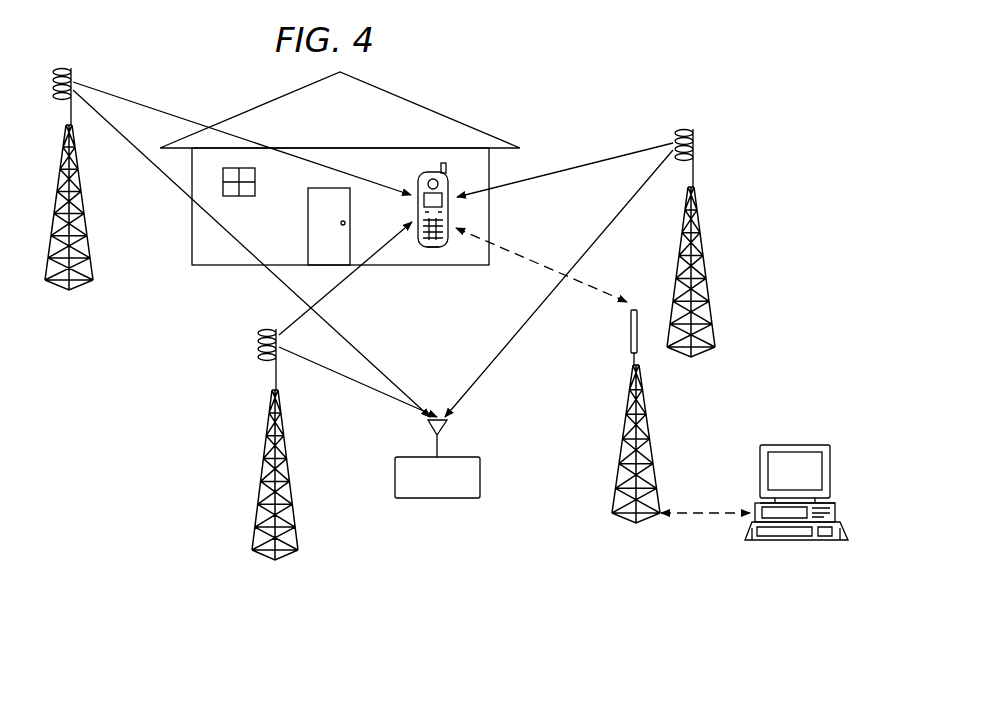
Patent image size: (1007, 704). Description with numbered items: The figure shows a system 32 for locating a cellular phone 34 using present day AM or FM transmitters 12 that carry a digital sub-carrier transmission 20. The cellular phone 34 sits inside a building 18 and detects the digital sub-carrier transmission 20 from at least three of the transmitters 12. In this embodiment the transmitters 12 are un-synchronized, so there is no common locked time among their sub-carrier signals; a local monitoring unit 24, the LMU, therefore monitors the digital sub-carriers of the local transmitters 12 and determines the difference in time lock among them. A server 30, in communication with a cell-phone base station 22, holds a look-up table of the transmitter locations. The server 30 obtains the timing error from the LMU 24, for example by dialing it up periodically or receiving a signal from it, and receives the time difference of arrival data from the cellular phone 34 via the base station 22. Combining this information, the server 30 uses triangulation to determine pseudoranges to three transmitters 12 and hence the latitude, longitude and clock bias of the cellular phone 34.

The AM or FM transmitter 12 is at (50, 284).
The building 18 is at (428, 110).
The digital sub-carrier transmission 20 is at (142, 102).
The cell-phone base station 22 is at (620, 517).
The local monitoring unit 24 is at (481, 477).
The server 30 is at (795, 444).
The system 32 is at (104, 326).
The cellular phone 34 is at (432, 249).